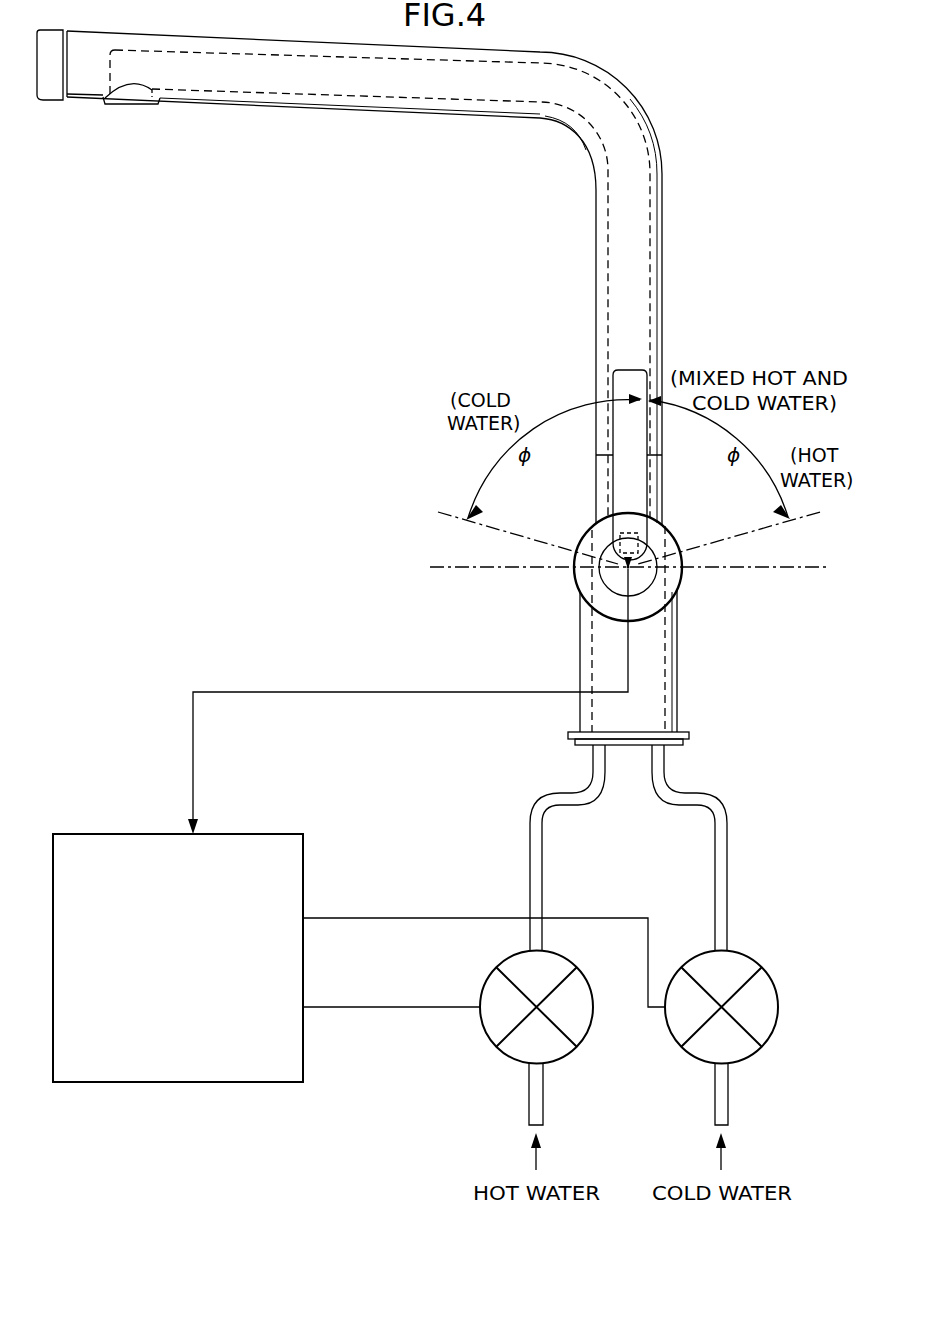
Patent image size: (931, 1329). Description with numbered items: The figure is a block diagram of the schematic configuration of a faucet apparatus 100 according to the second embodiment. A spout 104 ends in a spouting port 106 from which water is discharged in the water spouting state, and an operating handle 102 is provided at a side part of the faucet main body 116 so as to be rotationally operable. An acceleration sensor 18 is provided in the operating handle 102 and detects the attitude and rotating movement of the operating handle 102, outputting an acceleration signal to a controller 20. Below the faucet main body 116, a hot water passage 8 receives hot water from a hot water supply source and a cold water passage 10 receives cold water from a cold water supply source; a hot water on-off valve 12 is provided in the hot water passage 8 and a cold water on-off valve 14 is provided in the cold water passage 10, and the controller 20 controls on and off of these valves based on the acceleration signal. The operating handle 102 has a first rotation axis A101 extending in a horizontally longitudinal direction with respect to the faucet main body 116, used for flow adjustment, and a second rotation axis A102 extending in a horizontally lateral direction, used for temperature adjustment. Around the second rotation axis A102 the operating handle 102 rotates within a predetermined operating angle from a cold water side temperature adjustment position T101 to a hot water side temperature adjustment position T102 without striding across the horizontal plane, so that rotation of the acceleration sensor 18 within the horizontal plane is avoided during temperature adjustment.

The faucet apparatus 100 is at (400, 387).
The operating handle 102 is at (650, 366).
The spout 104 is at (417, 113).
The spouting port 106 is at (130, 104).
The faucet main body 116 is at (678, 688).
The acceleration sensor 18 is at (650, 518).
The hot water passage 8 is at (528, 863).
The cold water passage 10 is at (729, 857).
The hot water on-off valve 12 is at (494, 1046).
The cold water on-off valve 14 is at (762, 1047).
The controller 20 is at (190, 1084).
The first rotation axis A101 is at (773, 570).
The second rotation axis A102 is at (626, 569).
The cold water side temperature adjustment position T101 is at (527, 538).
The hot water side temperature adjustment position T102 is at (730, 538).